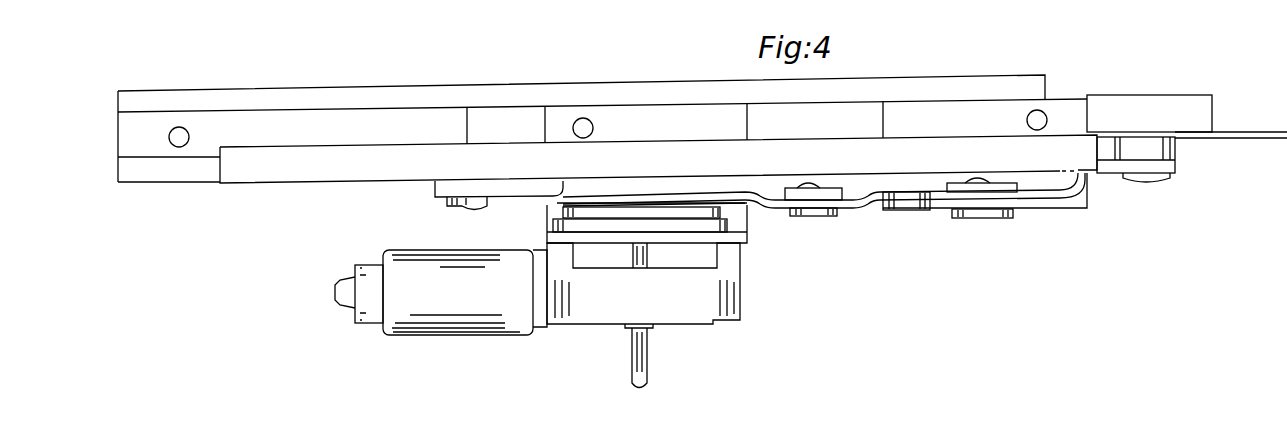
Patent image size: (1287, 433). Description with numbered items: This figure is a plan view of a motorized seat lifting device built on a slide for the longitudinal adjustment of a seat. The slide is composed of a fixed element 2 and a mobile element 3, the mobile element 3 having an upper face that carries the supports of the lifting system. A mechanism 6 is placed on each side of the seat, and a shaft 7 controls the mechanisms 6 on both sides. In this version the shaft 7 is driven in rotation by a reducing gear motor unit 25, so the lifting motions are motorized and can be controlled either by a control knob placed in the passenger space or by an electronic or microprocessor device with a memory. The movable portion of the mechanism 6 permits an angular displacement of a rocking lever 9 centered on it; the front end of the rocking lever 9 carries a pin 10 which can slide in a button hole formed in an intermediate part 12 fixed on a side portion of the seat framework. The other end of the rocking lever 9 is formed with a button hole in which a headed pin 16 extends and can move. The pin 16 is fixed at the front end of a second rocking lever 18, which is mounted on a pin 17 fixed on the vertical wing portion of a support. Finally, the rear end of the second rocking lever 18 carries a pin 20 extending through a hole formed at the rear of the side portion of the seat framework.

The fixed element 2 is at (1024, 84).
The mobile element 3 is at (1170, 110).
The mechanism 6 is at (727, 224).
The shaft 7 is at (650, 362).
The rocking lever 9 is at (557, 199).
The pin 10 is at (480, 208).
The intermediate part 12 is at (437, 184).
The pin 16 is at (818, 216).
The pin 17 is at (976, 219).
The second rocking lever 18 is at (930, 212).
The pin 20 is at (1152, 181).
The reducing gear motor unit 25 is at (520, 318).